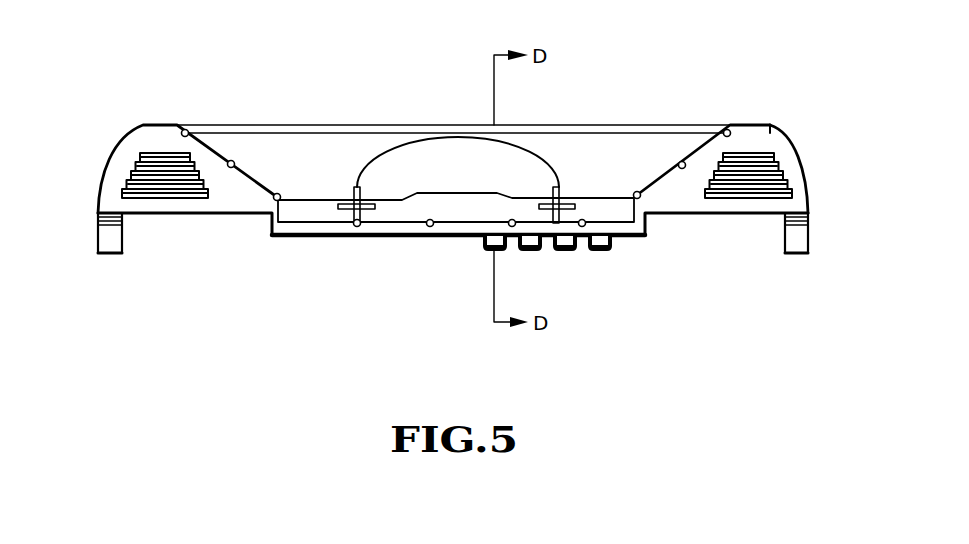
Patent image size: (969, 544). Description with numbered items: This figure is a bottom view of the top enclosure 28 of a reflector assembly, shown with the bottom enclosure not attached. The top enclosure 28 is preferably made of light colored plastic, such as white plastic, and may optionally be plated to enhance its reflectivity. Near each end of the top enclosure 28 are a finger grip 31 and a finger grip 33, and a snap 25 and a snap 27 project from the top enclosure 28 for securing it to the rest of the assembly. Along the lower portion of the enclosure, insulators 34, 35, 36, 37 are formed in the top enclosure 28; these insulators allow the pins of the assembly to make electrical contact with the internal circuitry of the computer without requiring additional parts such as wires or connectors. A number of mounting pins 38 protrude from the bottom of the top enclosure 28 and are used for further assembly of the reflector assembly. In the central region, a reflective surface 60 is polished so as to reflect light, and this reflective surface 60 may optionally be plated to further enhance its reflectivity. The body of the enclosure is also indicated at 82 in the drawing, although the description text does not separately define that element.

The snap 25 is at (97, 232).
The snap 27 is at (810, 230).
The top enclosure 28 is at (283, 142).
The finger grip 31 is at (788, 165).
The finger grip 33 is at (132, 170).
The insulator 34 is at (614, 250).
The insulator 35 is at (568, 252).
The insulator 36 is at (542, 252).
The insulator 37 is at (484, 251).
The mounting pins 38 is at (182, 130).
The reflective surface 60 is at (351, 150).
The housing body 82 is at (228, 205).